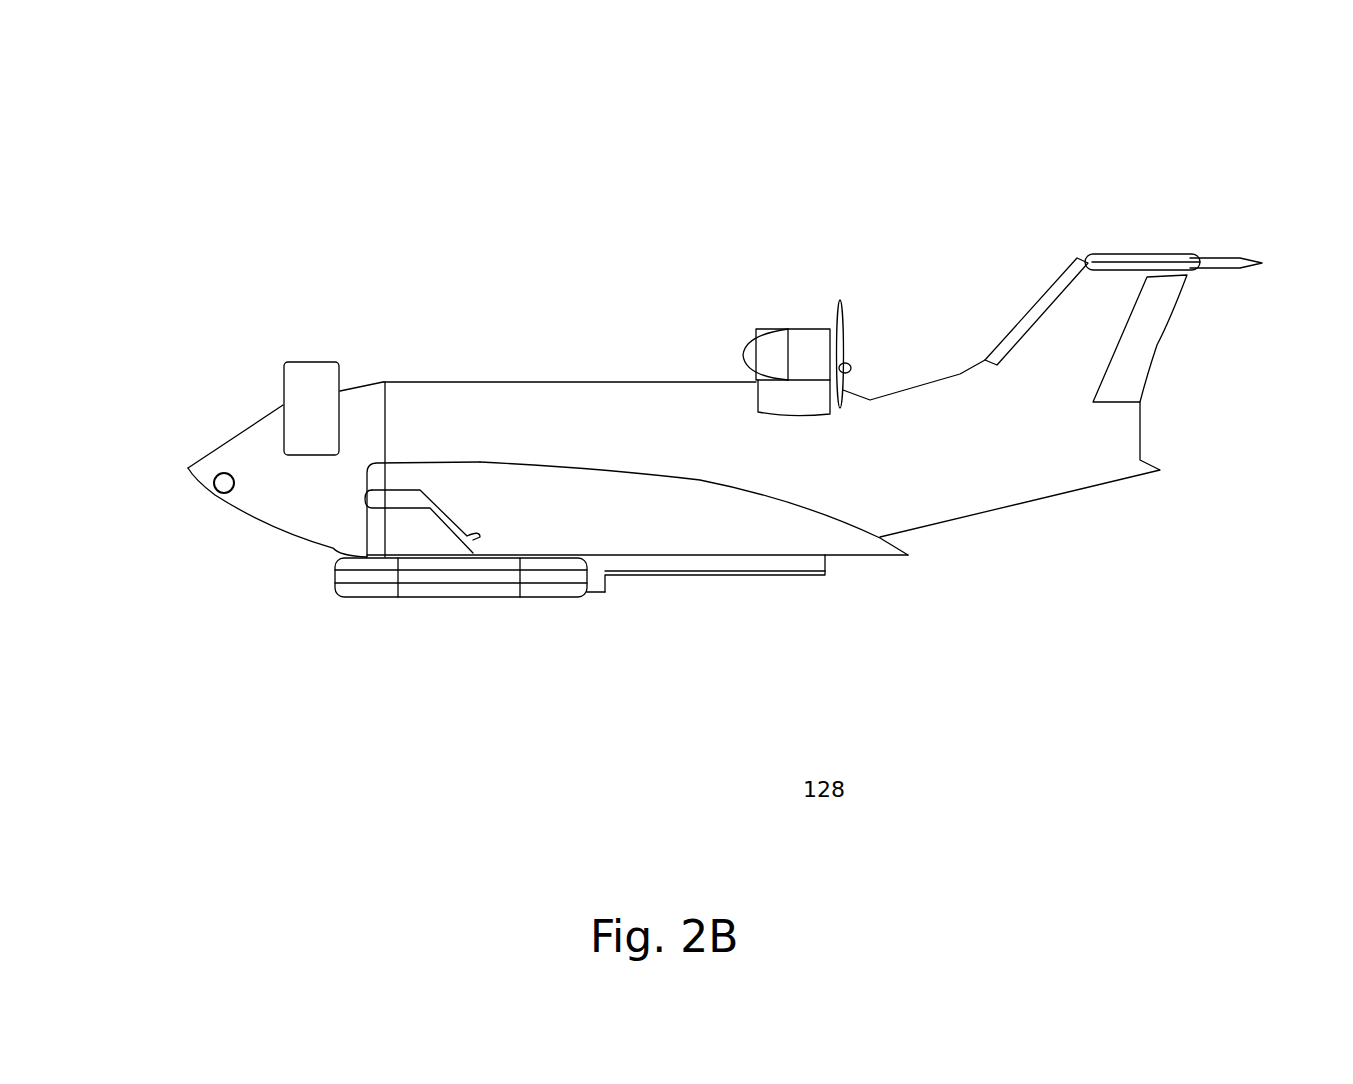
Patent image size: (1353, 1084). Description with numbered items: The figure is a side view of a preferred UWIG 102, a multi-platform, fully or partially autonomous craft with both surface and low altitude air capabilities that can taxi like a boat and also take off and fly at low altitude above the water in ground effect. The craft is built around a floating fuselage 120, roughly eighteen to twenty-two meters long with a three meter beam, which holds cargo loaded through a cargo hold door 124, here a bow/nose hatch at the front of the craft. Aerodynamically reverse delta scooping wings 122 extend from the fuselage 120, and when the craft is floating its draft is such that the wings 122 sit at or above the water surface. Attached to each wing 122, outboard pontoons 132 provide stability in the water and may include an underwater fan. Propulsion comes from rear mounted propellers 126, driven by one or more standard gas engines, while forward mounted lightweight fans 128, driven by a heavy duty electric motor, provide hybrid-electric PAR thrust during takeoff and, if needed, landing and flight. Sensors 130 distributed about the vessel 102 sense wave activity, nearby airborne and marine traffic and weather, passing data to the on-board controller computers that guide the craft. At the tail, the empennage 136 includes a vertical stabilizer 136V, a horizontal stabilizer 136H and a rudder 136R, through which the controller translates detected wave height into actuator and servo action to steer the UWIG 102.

The UWIG 102 is at (172, 200).
The floating fuselage 120 is at (990, 510).
The aerodynamically reverse delta scooping wings 122 is at (843, 558).
The cargo hold door 124 is at (362, 390).
The rear mounted propellers 126 is at (815, 329).
The forward mounted lightweight fans 128 is at (308, 368).
The sensors 130 is at (213, 488).
The outboard pontoons 132 is at (422, 597).
The empennage 136 is at (1128, 108).
The vertical stabilizer 136V is at (1083, 258).
The horizontal stabilizer 136H is at (1238, 258).
The rudder 136R is at (1153, 350).